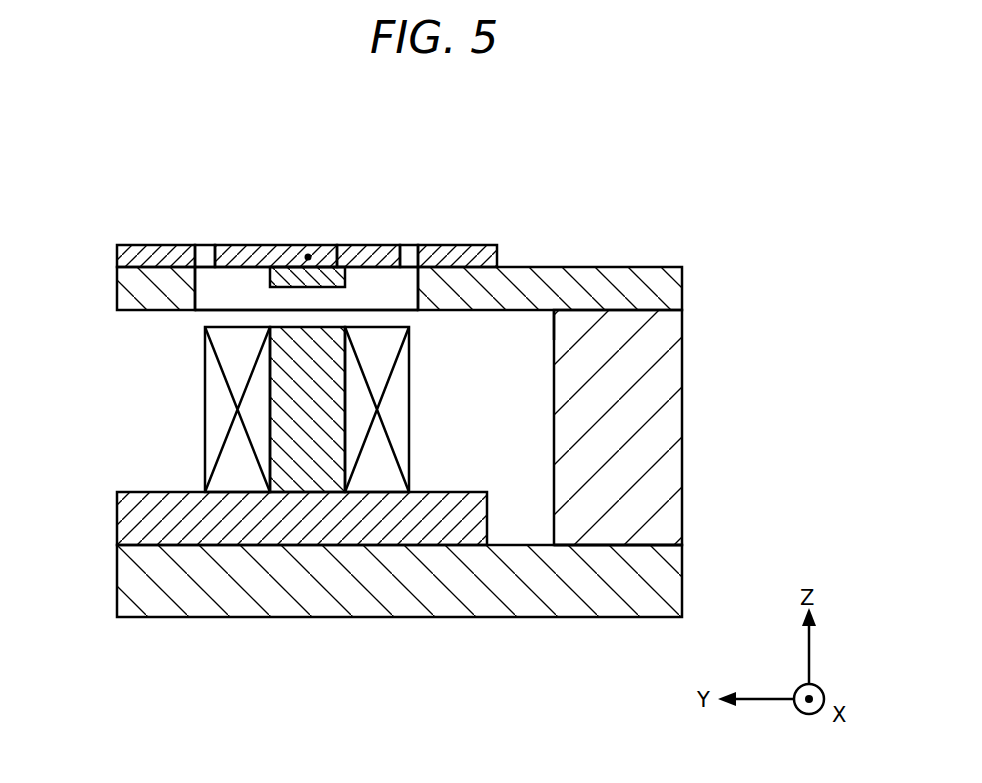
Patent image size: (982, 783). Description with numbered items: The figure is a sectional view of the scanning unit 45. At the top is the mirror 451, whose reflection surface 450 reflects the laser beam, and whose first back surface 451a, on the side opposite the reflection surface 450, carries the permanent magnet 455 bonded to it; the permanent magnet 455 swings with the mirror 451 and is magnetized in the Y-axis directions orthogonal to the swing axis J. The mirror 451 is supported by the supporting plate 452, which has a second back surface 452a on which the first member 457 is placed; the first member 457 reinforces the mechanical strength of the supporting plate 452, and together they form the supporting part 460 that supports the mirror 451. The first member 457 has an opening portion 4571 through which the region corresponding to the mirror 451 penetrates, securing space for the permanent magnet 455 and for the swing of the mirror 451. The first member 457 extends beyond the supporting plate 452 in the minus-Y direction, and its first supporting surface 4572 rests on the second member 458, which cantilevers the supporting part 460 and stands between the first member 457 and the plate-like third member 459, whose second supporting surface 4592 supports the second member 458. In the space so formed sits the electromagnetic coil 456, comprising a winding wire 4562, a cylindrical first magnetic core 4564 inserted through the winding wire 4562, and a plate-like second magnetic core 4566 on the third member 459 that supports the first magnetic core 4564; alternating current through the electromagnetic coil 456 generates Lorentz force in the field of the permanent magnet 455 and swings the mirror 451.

The scanning unit 45 is at (429, 379).
The supporting part 460 is at (429, 262).
The supporting plate 452 is at (150, 252).
The second back surface 452a is at (120, 281).
The first back surface 451a is at (205, 258).
The reflection surface 450 is at (248, 250).
The mirror 451 is at (294, 257).
The swing axis J is at (308, 254).
The permanent magnet 455 is at (337, 252).
The first member 457 is at (652, 292).
The opening portion 4571 is at (207, 308).
The first supporting surface 4572 is at (580, 313).
The second member 458 is at (660, 428).
The second supporting surface 4592 is at (607, 543).
The third member 459 is at (648, 593).
The electromagnetic coil 456 is at (269, 467).
The winding wire 4562 is at (215, 425).
The first magnetic core 4564 is at (320, 443).
The second magnetic core 4566 is at (155, 517).